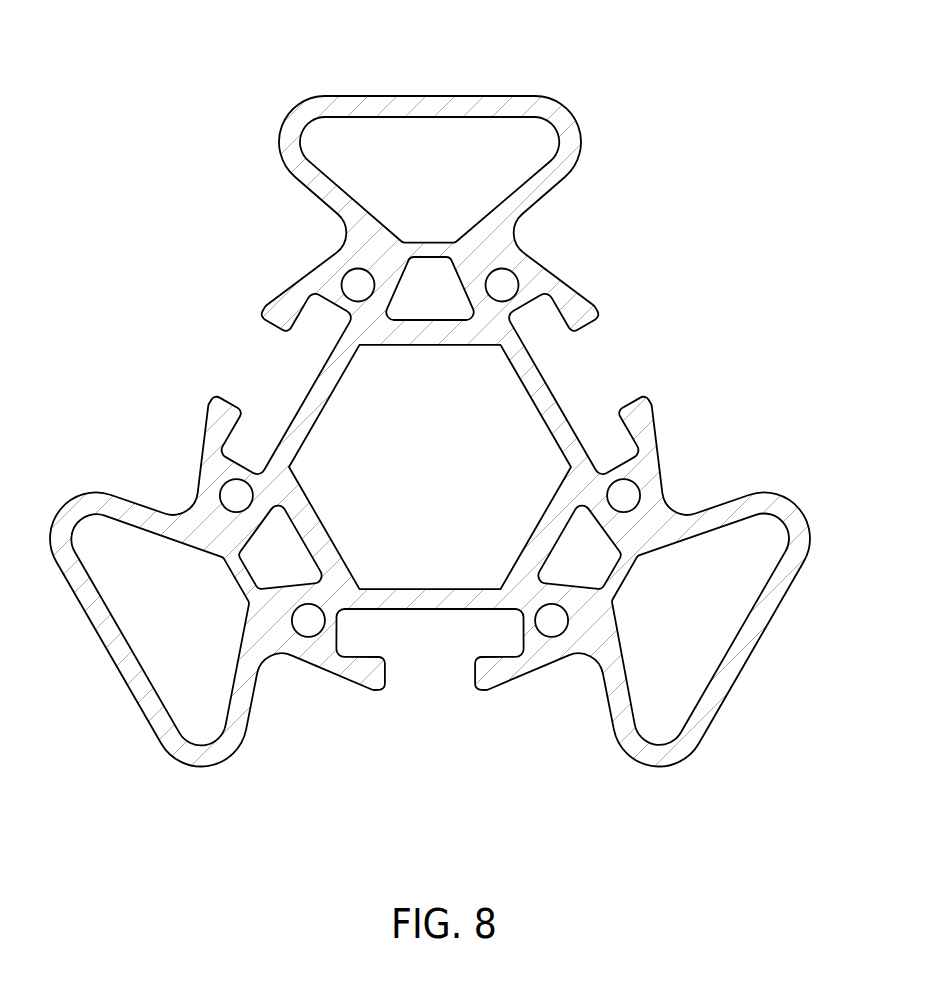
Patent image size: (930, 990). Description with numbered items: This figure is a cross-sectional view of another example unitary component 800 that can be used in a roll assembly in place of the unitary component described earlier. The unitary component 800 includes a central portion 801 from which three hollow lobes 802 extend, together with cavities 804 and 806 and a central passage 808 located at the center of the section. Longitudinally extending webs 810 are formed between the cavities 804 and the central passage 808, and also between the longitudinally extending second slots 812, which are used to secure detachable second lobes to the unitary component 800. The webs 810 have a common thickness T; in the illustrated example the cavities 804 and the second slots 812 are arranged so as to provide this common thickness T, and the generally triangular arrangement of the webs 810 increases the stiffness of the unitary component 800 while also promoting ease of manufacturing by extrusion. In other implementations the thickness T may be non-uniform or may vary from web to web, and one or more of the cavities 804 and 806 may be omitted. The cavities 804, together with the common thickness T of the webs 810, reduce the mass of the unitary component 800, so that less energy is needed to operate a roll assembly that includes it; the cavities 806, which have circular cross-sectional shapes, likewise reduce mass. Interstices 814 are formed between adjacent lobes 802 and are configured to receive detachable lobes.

The unitary component 800 is at (163, 115).
The central portion 801 is at (203, 443).
The hollow lobes 802 is at (430, 95).
The cavities 804 is at (437, 287).
The cavities 806 is at (342, 282).
The central passage 808 is at (453, 510).
The longitudinally extending webs 810 is at (460, 600).
The longitudinally extending second slots 812 is at (293, 388).
The interstices 814 is at (216, 356).
The thickness T is at (285, 352).